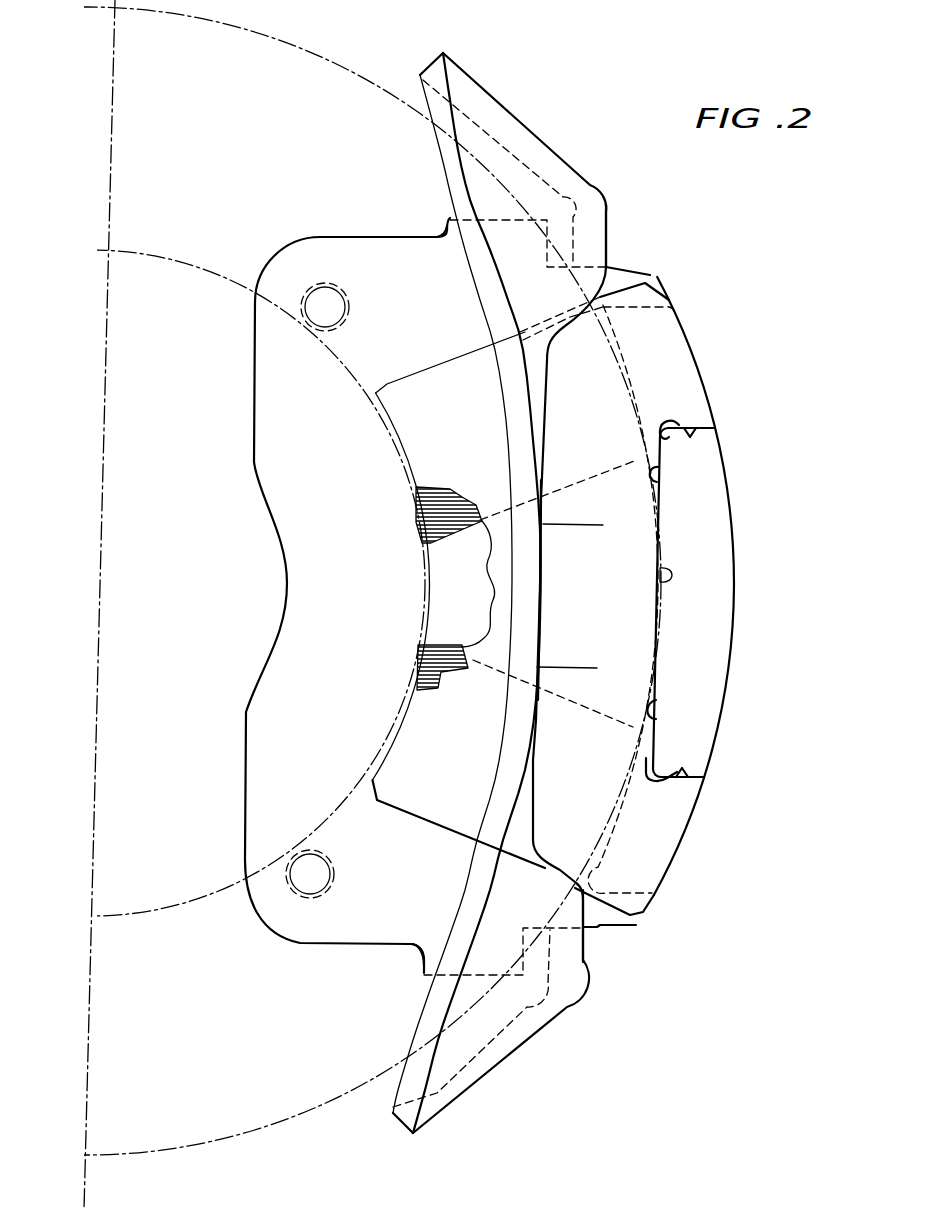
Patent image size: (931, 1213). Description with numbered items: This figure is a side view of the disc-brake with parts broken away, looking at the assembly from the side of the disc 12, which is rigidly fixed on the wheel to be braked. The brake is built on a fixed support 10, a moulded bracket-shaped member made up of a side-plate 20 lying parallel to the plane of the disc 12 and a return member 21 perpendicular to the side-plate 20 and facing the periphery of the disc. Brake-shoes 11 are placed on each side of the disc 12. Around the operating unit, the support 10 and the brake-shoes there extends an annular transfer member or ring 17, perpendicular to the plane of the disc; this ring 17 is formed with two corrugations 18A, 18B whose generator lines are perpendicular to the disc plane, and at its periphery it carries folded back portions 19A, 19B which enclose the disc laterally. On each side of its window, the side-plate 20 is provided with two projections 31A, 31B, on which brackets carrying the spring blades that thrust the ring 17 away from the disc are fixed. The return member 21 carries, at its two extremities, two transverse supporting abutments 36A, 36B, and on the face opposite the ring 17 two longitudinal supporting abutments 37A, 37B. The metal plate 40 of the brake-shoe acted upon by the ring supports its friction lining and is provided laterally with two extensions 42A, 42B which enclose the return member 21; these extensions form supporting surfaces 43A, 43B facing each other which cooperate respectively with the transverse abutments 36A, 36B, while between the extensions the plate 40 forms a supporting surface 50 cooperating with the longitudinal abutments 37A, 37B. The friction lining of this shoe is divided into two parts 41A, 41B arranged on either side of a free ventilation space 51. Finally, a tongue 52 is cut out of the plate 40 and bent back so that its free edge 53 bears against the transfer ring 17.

The fixed support 10 is at (694, 596).
The brake-shoe 11 is at (422, 832).
The disc 12 is at (353, 93).
The annular transfer member or ring 17 is at (538, 593).
The corrugation 18A is at (600, 228).
The corrugation 18B is at (570, 970).
The folded back portion 19A is at (483, 145).
The folded back portion 19B is at (503, 1040).
The side-plate 20 is at (270, 395).
The return member 21 is at (707, 630).
The projection 31A is at (447, 236).
The projection 31B is at (423, 957).
The transverse supporting abutment 36A is at (707, 428).
The transverse supporting abutment 36B is at (700, 790).
The longitudinal supporting abutment 37A is at (660, 478).
The longitudinal supporting abutment 37B is at (650, 708).
The metal plate 40 is at (458, 417).
The friction lining part 41A is at (433, 523).
The friction lining part 41B is at (420, 670).
The extension 42A is at (677, 342).
The extension 42B is at (673, 842).
The supporting surface 43A is at (690, 434).
The supporting surface 43B is at (683, 785).
The supporting surface 50 is at (660, 576).
The free ventilation space 51 is at (445, 585).
The tongue 52 is at (611, 635).
The free edge 53 is at (530, 587).